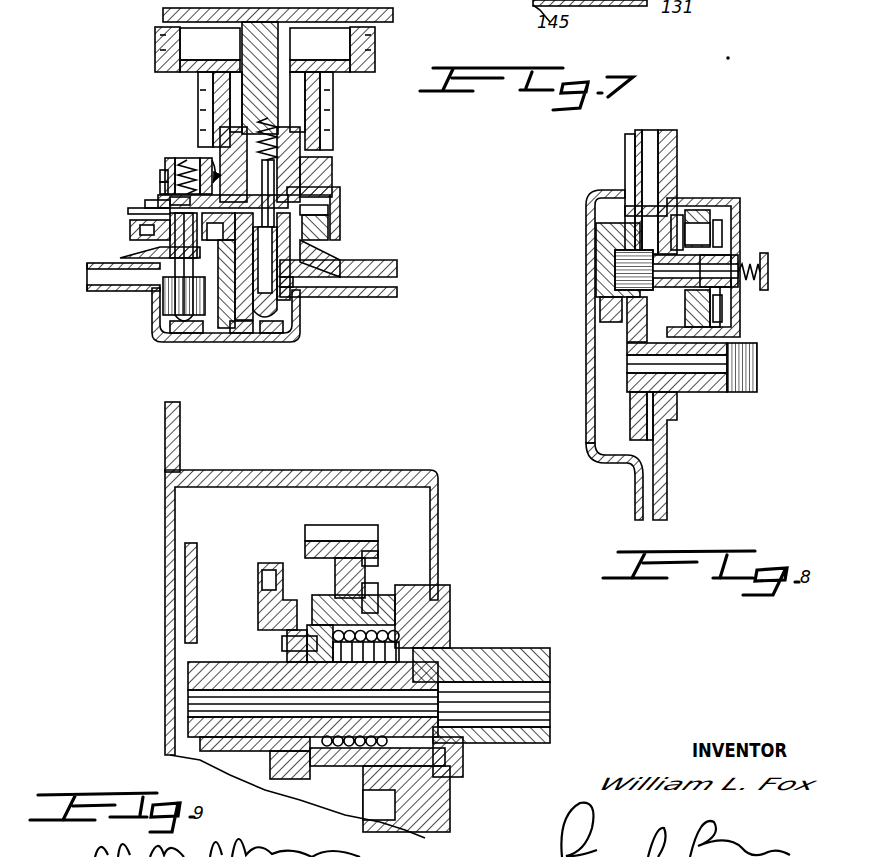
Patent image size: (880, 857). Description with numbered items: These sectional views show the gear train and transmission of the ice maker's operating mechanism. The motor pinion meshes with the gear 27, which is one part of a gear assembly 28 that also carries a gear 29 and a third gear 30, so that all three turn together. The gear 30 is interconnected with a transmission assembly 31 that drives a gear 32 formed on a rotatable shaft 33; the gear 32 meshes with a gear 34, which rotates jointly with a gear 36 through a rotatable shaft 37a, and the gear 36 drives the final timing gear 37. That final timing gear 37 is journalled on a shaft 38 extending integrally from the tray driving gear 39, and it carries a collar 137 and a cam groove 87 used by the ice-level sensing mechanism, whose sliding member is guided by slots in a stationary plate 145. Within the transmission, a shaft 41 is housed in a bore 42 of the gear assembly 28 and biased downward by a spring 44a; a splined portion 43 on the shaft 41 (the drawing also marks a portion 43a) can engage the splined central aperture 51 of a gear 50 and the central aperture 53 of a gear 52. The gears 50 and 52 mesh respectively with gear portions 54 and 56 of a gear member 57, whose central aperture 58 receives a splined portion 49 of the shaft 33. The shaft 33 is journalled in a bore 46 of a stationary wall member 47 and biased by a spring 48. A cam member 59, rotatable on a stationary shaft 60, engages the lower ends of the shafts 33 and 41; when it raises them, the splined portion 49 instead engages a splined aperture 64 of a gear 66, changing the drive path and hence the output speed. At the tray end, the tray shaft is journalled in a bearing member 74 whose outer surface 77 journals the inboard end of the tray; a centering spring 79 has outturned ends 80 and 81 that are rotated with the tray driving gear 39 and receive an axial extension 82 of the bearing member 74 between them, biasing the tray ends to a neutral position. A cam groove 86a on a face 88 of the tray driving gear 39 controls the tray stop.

In FIG. 7, the gear 27 is at (378, 36).
In FIG. 7, the gear assembly 28 is at (346, 82).
In FIG. 7, the gear 29 is at (334, 114).
In FIG. 7, the third gear 30 is at (216, 163).
In FIG. 7, the transmission assembly 31 is at (301, 323).
In FIG. 7, the gear 32 is at (165, 300).
In FIG. 8, the gear 32 is at (606, 270).
In FIG. 7, the rotatable shaft 33 is at (178, 266).
In FIG. 8, the rotatable shaft 33 is at (742, 300).
In FIG. 8, the gear 34 is at (707, 195).
In FIG. 8, the gear 36 is at (758, 375).
In FIG. 9, the final timing gear 37 is at (269, 563).
In FIG. 8, the rotatable shaft 37a is at (700, 382).
In FIG. 9, the shaft 38 is at (210, 660).
In FIG. 9, the tray driving gear 39 is at (346, 527).
In FIG. 7, the shaft 41 is at (267, 298).
In FIG. 7, the bore 42 is at (312, 170).
In FIG. 7, the splined portion 43 is at (307, 223).
In FIG. 7, the plate 43a is at (300, 196).
In FIG. 7, the spring 44a is at (292, 131).
In FIG. 7, the bore 46 is at (165, 187).
In FIG. 8, the bore 46 is at (758, 258).
In FIG. 7, the stationary wall member 47 is at (165, 176).
In FIG. 8, the stationary wall member 47 is at (741, 216).
In FIG. 7, the spring 48 is at (188, 160).
In FIG. 8, the spring 48 is at (766, 272).
In FIG. 7, the splined portion 49 is at (128, 216).
In FIG. 8, the splined portion 49 is at (734, 309).
In FIG. 7, the gear 50 is at (341, 203).
In FIG. 7, the central aperture 51 is at (293, 224).
In FIG. 8, the central aperture 51 is at (702, 220).
In FIG. 7, the gear 52 is at (338, 248).
In FIG. 7, the central aperture 53 is at (296, 216).
In FIG. 7, the gear portion 54 is at (165, 205).
In FIG. 7, the gear portion 56 is at (150, 232).
In FIG. 8, the gear portion 56 is at (696, 210).
In FIG. 7, the gear member 57 is at (166, 232).
In FIG. 7, the central aperture 58 is at (96, 272).
In FIG. 8, the central aperture 58 is at (742, 243).
In FIG. 7, the cam member 59 is at (263, 336).
In FIG. 7, the stationary shaft 60 is at (228, 312).
In FIG. 7, the splined aperture 64 is at (172, 200).
In FIG. 7, the gear 66 is at (178, 214).
In FIG. 8, the gear 66 is at (741, 202).
In FIG. 9, the bearing member 74 is at (553, 707).
In FIG. 9, the outer surface 77 is at (505, 650).
In FIG. 9, the centering spring 79 is at (422, 618).
In FIG. 9, the radially outturned end 80 is at (326, 797).
In FIG. 9, the radially outturned end 81 is at (406, 799).
In FIG. 9, the axial extension 82 is at (456, 768).
In FIG. 9, the cam groove 86a is at (373, 560).
In FIG. 9, the cam groove 87 is at (262, 582).
In FIG. 9, the face 88 is at (378, 592).
In FIG. 9, the collar 137 is at (186, 765).
In FIG. 7, the stationary plate 145 is at (399, 272).
In FIG. 8, the stationary plate 145 is at (668, 488).
In FIG. 9, the stationary plate 145 is at (193, 612).